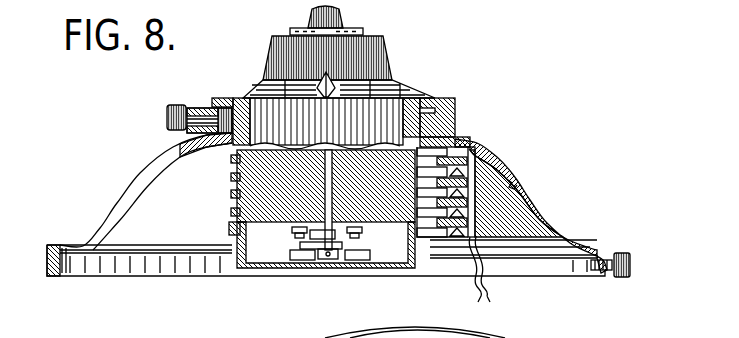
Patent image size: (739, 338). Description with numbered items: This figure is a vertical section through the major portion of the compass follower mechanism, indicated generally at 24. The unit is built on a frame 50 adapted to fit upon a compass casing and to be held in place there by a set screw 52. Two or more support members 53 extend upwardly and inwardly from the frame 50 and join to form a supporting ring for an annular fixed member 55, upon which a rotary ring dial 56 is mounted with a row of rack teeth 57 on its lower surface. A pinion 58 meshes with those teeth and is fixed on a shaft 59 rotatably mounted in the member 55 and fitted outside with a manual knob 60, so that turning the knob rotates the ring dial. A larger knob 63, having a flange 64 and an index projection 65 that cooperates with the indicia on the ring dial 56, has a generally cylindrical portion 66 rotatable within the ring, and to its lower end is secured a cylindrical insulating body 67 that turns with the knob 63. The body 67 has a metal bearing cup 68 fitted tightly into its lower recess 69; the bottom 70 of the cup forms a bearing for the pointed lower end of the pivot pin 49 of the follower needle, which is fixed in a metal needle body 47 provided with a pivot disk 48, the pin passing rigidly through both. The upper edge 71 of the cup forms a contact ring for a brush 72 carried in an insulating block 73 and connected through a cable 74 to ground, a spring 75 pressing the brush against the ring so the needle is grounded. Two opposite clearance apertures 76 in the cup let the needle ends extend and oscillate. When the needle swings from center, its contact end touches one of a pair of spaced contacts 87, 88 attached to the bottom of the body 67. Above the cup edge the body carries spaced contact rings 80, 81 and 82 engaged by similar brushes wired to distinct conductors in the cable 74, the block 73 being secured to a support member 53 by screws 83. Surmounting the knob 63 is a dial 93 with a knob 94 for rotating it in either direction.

The adjusting head assembly 24 is at (403, 56).
The needle body 47 is at (312, 256).
The pivot disk 48 is at (342, 262).
The pivot pin 49 is at (326, 200).
The frame 50 is at (48, 263).
The set screw 52 is at (632, 264).
The support members 53 is at (113, 200).
The annular fixed member 55 is at (205, 99).
The rotary ring dial 56 is at (236, 99).
The rack teeth 57 is at (447, 111).
The pinion 58 is at (200, 150).
The shaft 59 is at (197, 109).
The manual knob 60 is at (167, 118).
The knob 63 is at (276, 45).
The flange 64 is at (398, 97).
The index projection 65 is at (322, 90).
The cylindrical portion 66 is at (326, 122).
The cylindrical insulating body 67 is at (398, 224).
The metal bearing cup 68 is at (231, 243).
The lower recess 69 is at (231, 212).
The bottom of the cup 70 is at (316, 262).
The upper edge of the cup 71 is at (233, 229).
The brush 72 is at (430, 238).
The insulating block 73 is at (558, 231).
The cable 74 is at (489, 287).
The spring 75 is at (448, 238).
The clearance apertures 76 is at (354, 260).
The contact ring 80 is at (231, 158).
The contact ring 81 is at (231, 176).
The contact ring 82 is at (231, 194).
The screws 83 is at (514, 183).
The spaced contact 87 is at (360, 238).
The spaced contact 88 is at (294, 238).
The dial 93 is at (363, 29).
The knob 94 is at (310, 13).